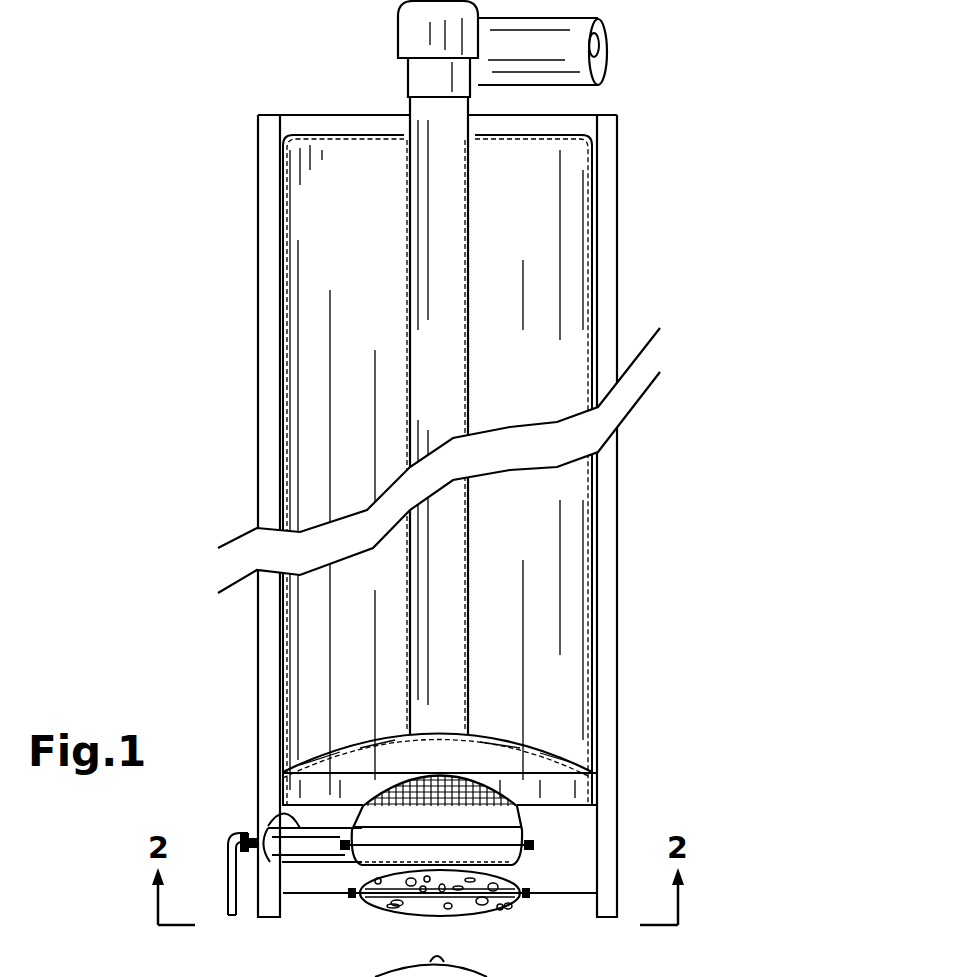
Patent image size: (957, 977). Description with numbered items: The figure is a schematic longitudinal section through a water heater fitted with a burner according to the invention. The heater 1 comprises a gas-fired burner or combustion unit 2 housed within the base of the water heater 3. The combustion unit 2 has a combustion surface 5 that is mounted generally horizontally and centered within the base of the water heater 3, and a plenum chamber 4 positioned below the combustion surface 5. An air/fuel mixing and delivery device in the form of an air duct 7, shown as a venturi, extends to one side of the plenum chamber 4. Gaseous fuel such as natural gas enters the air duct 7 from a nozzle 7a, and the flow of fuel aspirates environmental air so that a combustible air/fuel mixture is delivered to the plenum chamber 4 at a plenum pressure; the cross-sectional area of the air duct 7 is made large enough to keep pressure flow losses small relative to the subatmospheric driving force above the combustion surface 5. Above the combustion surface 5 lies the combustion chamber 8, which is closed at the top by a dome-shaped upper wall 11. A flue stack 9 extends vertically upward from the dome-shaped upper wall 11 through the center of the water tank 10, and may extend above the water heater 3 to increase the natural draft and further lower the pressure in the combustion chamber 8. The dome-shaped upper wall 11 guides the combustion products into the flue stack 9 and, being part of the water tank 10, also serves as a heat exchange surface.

The heater 1 is at (550, 733).
The combustion unit 2 is at (540, 825).
The water heater 3 is at (607, 505).
The plenum chamber 4 is at (405, 852).
The combustion surface 5 is at (400, 785).
The air duct 7 is at (297, 828).
The nozzle 7a is at (270, 852).
The combustion chamber 8 is at (455, 753).
The flue stack 9 is at (442, 262).
The water tank 10 is at (316, 310).
The dome-shaped upper wall 11 is at (560, 755).